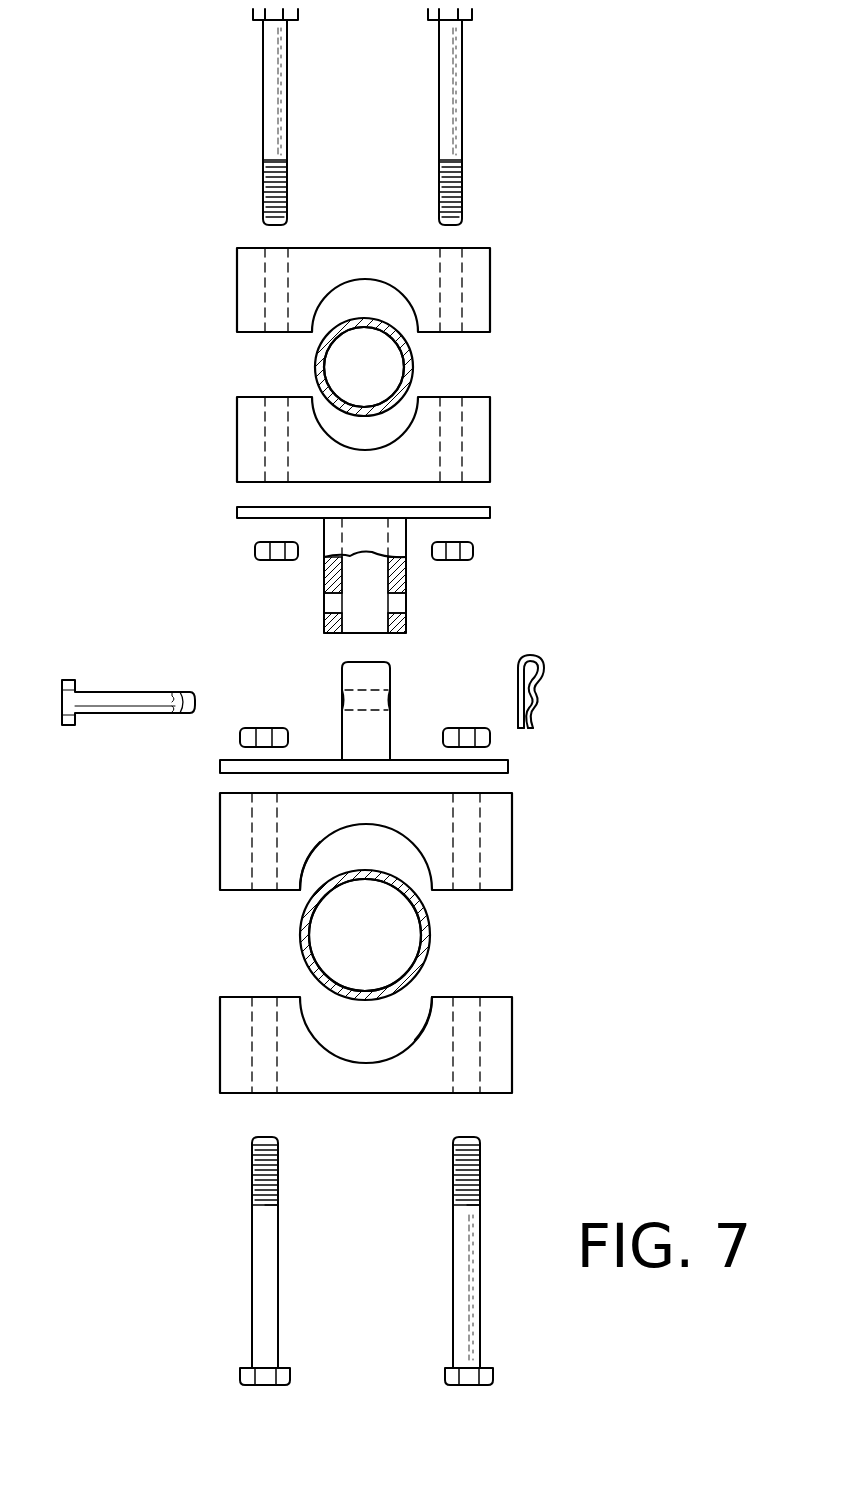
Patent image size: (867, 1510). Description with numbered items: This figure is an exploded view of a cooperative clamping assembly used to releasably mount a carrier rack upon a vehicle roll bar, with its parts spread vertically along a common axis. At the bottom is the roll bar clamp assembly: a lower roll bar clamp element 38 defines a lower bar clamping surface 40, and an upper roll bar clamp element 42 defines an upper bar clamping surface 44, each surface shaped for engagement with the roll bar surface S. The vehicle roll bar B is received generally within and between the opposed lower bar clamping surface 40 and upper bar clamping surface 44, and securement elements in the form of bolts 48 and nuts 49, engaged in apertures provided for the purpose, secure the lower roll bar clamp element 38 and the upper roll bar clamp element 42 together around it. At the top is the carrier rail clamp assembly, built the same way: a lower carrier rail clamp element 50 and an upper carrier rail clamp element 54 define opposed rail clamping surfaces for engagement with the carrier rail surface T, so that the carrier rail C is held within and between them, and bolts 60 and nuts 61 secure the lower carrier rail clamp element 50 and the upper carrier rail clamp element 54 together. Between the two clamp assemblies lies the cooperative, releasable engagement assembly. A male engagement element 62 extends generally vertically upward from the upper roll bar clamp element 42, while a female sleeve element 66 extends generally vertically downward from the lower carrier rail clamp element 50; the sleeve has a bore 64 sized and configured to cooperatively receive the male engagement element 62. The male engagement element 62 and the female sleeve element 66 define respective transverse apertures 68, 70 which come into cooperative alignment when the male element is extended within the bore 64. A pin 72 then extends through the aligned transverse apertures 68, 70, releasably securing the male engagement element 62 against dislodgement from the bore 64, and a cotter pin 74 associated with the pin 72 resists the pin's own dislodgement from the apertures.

The lower roll bar clamp element 38 is at (502, 1040).
The lower bar clamping surface 40 is at (424, 1012).
The upper roll bar clamp element 42 is at (512, 840).
The upper bar clamping surface 44 is at (310, 857).
The bolts 48 is at (259, 1261).
The nuts 49 is at (240, 738).
The lower carrier rail clamp element 50 is at (490, 432).
The upper carrier rail clamp element 54 is at (490, 285).
The bolts 60 is at (268, 78).
The nuts 61 is at (255, 551).
The male engagement element 62 is at (382, 735).
The bore 64 is at (365, 622).
The female sleeve element 66 is at (400, 574).
The transverse aperture 68 is at (352, 703).
The transverse aperture 70 is at (333, 604).
The pin 72 is at (121, 695).
The cotter pin 74 is at (547, 668).
The vehicle roll bar B is at (305, 926).
The roll bar surface S is at (427, 913).
The carrier rail C is at (320, 357).
The carrier rail surface T is at (414, 357).